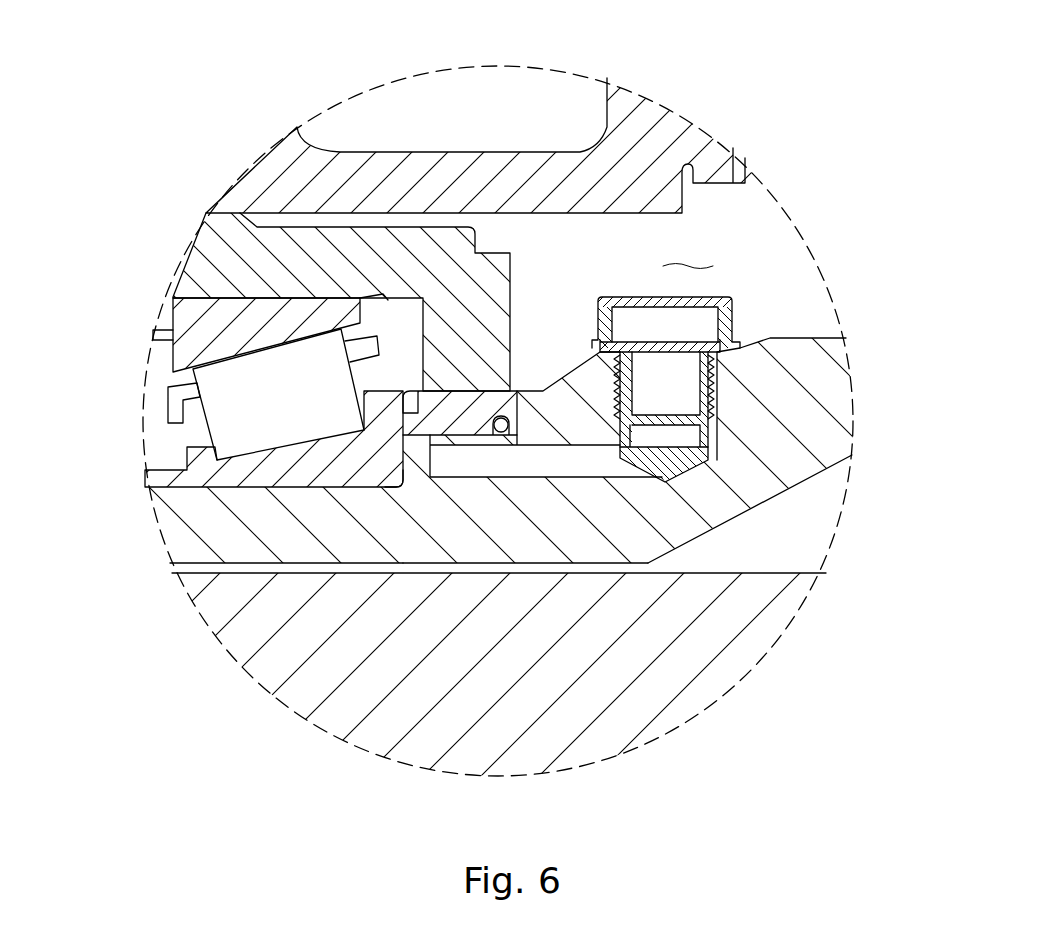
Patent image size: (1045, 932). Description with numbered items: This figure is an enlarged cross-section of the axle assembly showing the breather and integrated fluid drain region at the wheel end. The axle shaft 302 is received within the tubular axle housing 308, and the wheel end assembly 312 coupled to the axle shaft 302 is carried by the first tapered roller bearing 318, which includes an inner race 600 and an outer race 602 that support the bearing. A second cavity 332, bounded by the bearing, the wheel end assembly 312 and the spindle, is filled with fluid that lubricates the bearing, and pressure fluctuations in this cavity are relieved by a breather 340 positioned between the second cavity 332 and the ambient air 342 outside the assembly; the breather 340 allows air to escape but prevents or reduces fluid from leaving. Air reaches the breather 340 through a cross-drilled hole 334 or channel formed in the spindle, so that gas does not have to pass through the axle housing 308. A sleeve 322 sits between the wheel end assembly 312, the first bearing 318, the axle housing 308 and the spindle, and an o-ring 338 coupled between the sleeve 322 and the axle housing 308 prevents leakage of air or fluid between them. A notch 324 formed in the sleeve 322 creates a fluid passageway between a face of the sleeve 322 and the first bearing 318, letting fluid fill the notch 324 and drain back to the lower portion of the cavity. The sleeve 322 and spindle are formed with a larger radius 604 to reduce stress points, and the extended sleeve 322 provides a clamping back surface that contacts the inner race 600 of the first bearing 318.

The axle shaft 302 is at (653, 627).
The axle housing or tube 308 is at (825, 393).
The wheel end assembly 312 is at (200, 262).
The first tapered roller bearing 318 is at (233, 405).
The sleeve 322 is at (470, 400).
The notch 324 is at (385, 298).
The second cavity 332 is at (165, 456).
The cross-drilled hole or channel 334 is at (600, 478).
The o-ring 338 is at (502, 436).
The breather 340 is at (736, 299).
The ambient air 342 is at (688, 247).
The inner race 600 is at (273, 468).
The outer race 602 is at (215, 331).
The radius 604 is at (402, 489).